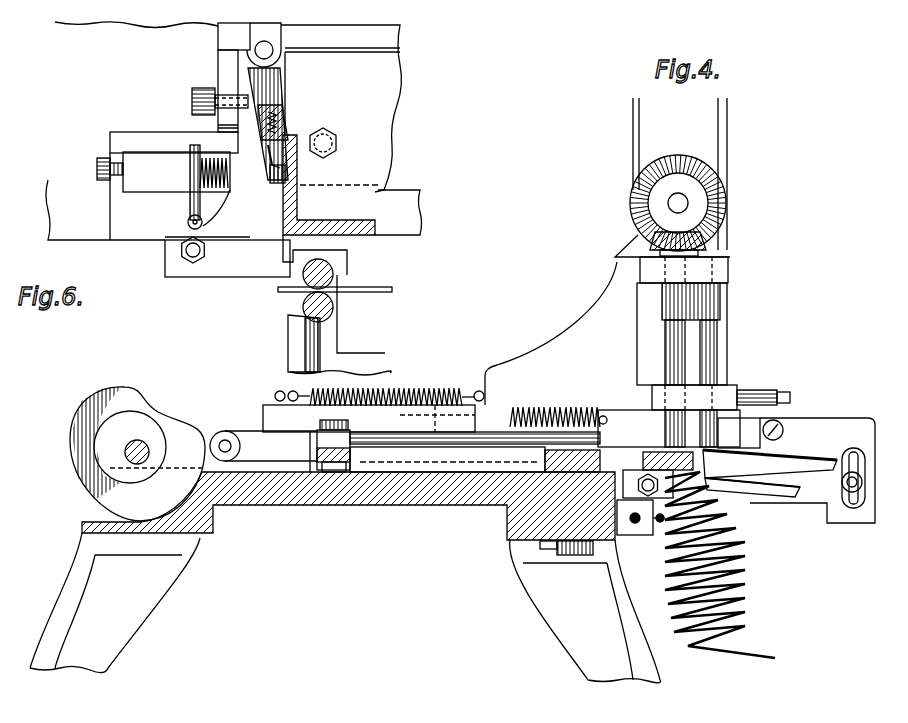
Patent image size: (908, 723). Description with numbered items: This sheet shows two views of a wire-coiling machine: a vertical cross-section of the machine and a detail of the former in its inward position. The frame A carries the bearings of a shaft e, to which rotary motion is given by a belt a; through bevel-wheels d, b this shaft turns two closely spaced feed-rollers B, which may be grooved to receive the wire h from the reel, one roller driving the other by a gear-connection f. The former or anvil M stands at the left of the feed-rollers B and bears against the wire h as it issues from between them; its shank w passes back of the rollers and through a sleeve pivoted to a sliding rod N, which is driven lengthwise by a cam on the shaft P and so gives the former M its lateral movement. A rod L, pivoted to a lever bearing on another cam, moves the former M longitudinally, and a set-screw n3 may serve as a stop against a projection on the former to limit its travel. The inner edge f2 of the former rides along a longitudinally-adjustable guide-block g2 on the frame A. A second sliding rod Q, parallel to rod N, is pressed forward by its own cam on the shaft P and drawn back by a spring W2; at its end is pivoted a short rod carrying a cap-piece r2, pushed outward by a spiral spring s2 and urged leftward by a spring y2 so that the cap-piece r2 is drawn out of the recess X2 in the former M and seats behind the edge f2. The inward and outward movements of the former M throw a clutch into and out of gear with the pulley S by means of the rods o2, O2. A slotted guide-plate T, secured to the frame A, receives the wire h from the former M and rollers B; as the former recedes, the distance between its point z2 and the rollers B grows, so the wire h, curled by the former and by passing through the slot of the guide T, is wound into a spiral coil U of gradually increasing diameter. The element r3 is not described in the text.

In FIG. 6, the sliding rod Q is at (249, 36).
In FIG. 4, the sliding rod Q is at (263, 451).
In FIG. 6, the shank of the former w is at (398, 212).
In FIG. 6, the spring y2 is at (282, 86).
In FIG. 6, the spiral spring s2 is at (281, 122).
In FIG. 6, the cap-piece r2 is at (261, 157).
In FIG. 6, the inner edge of the former f2 is at (261, 177).
In FIG. 6, the recess in the former X2 is at (274, 182).
In FIG. 6, the guide-block g2 is at (176, 172).
In FIG. 6, the rods o2 is at (200, 187).
In FIG. 6, the former M is at (227, 254).
In FIG. 6, the feed-rollers B is at (333, 307).
In FIG. 4, the feed-rollers B is at (687, 383).
In FIG. 6, the wire h is at (336, 279).
In FIG. 6, the point of the former z2 is at (272, 292).
In FIG. 6, the slotted guide-plate T is at (304, 343).
In FIG. 4, the slotted guide-plate T is at (789, 470).
In FIG. 4, the belt a is at (730, 133).
In FIG. 4, the bevel-wheel d is at (685, 203).
In FIG. 4, the shaft e is at (678, 203).
In FIG. 4, the bevel-wheel b is at (708, 247).
In FIG. 4, the gear-connection f is at (686, 301).
In FIG. 4, the sliding rod N is at (739, 433).
In FIG. 4, the spring W2 is at (379, 389).
In FIG. 4, the rods O2 is at (431, 438).
In FIG. 4, the frame A is at (345, 577).
In FIG. 4, the shaft P is at (137, 454).
In FIG. 4, the cam part r3 is at (118, 420).
In FIG. 4, the pulley S is at (640, 535).
In FIG. 4, the rod L is at (630, 535).
In FIG. 4, the set-screw n3 is at (593, 548).
In FIG. 4, the spiral coil U is at (720, 565).